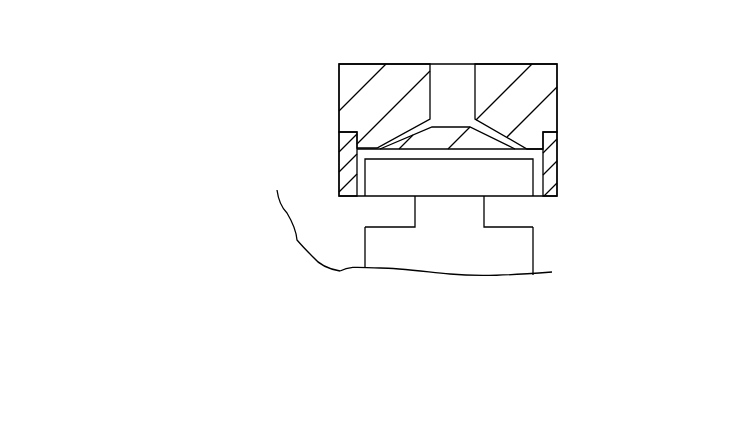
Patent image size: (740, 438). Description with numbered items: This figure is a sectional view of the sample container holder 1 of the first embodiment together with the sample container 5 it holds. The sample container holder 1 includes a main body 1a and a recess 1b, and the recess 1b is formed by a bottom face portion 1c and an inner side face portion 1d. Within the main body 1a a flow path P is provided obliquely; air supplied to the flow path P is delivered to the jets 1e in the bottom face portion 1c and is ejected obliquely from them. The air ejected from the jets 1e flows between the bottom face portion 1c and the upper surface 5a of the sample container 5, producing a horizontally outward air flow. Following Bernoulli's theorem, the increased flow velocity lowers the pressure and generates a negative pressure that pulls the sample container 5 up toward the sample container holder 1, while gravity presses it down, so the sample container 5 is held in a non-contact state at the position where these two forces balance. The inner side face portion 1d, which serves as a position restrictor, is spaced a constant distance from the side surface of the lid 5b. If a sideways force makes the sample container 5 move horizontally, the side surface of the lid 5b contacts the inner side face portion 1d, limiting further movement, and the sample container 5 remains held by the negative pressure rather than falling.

The sample container holder 1 is at (557, 64).
The main body 1a is at (547, 110).
The recess 1b is at (297, 242).
The bottom face portion 1c is at (350, 163).
The inner side face portion 1d is at (368, 158).
The jet 1e is at (381, 151).
The sample container 5 is at (500, 273).
The upper surface 5a is at (480, 163).
The lid 5b is at (487, 190).
The flow path P is at (450, 64).